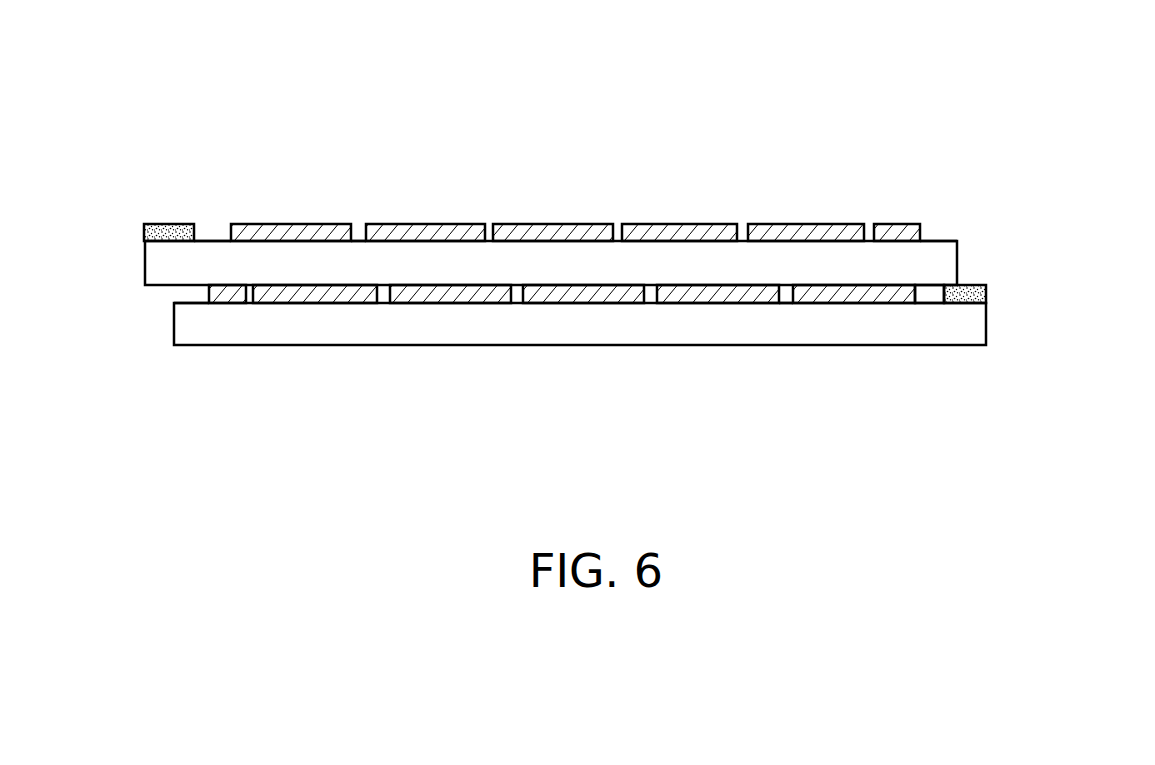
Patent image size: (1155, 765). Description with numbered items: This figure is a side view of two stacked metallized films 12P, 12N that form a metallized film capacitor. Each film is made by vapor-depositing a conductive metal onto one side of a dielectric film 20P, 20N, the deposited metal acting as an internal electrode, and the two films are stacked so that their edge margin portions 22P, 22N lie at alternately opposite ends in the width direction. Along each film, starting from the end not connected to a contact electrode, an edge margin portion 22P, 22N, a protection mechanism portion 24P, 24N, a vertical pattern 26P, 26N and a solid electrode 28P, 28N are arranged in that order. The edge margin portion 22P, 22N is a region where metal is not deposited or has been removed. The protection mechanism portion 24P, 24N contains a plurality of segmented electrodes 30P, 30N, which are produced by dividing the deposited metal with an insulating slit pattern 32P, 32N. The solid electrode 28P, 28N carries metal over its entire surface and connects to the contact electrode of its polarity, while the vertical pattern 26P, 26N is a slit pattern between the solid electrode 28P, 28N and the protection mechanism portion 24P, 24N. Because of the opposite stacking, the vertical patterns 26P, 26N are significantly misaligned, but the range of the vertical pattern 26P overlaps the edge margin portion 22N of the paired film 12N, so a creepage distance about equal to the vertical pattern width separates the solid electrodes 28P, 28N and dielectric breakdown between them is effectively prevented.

The metallized film 12P is at (982, 218).
The metallized film 12N is at (992, 350).
The dielectric film 20P is at (770, 263).
The dielectric film 20N is at (409, 330).
The edge margin portion 22P is at (940, 232).
The edge margin portion 22N is at (197, 293).
The protection mechanism portion 24P is at (453, 105).
The protection mechanism portion 24N is at (875, 427).
The vertical pattern 26P is at (212, 232).
The vertical pattern 26N is at (930, 295).
The solid electrode 28P is at (170, 223).
The solid electrode 28N is at (967, 297).
The segmented electrode 30P is at (305, 227).
The segmented electrode 30N is at (713, 295).
The insulating slit pattern 32P is at (357, 228).
The insulating slit pattern 32N is at (786, 295).